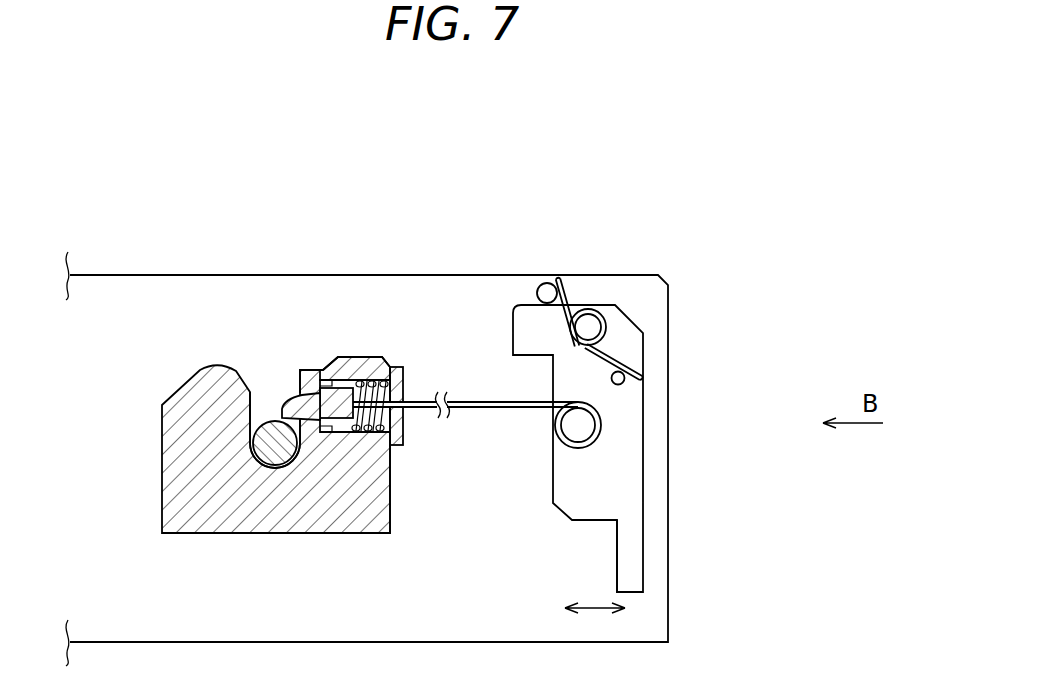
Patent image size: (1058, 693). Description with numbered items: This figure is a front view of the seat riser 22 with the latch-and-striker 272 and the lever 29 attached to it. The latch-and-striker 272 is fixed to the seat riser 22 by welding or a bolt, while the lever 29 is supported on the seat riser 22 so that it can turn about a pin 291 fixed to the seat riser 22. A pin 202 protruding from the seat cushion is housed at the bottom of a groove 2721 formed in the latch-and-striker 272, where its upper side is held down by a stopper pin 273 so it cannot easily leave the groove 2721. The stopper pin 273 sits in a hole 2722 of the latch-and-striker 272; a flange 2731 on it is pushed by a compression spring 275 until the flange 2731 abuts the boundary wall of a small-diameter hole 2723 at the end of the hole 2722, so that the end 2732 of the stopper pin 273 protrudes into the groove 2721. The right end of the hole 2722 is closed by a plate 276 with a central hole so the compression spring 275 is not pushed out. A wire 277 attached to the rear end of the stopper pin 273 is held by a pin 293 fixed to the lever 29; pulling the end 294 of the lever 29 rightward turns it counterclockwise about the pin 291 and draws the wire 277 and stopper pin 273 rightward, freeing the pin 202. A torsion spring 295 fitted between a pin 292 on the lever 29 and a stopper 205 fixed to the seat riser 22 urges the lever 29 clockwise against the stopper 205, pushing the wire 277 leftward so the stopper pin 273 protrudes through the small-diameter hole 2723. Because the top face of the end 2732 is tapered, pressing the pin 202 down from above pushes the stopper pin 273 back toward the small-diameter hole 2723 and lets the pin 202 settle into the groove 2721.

The seat riser 22 is at (90, 298).
The latch-and-striker 272 is at (183, 382).
The groove 2721 is at (262, 395).
The hole 2722 is at (346, 433).
The small-diameter hole 2723 is at (310, 378).
The stopper pin 273 is at (297, 376).
The flange 2731 is at (340, 390).
The end 2732 is at (290, 398).
The compression spring 275 is at (372, 395).
The plate 276 is at (397, 385).
The wire 277 is at (488, 402).
The pin 202 is at (275, 458).
The lever 29 is at (647, 335).
The pin 291 is at (602, 307).
The pin 292 is at (625, 382).
The pin 293 is at (588, 425).
The end 294 is at (635, 558).
The stopper 205 is at (548, 283).
The torsion spring 295 is at (573, 303).